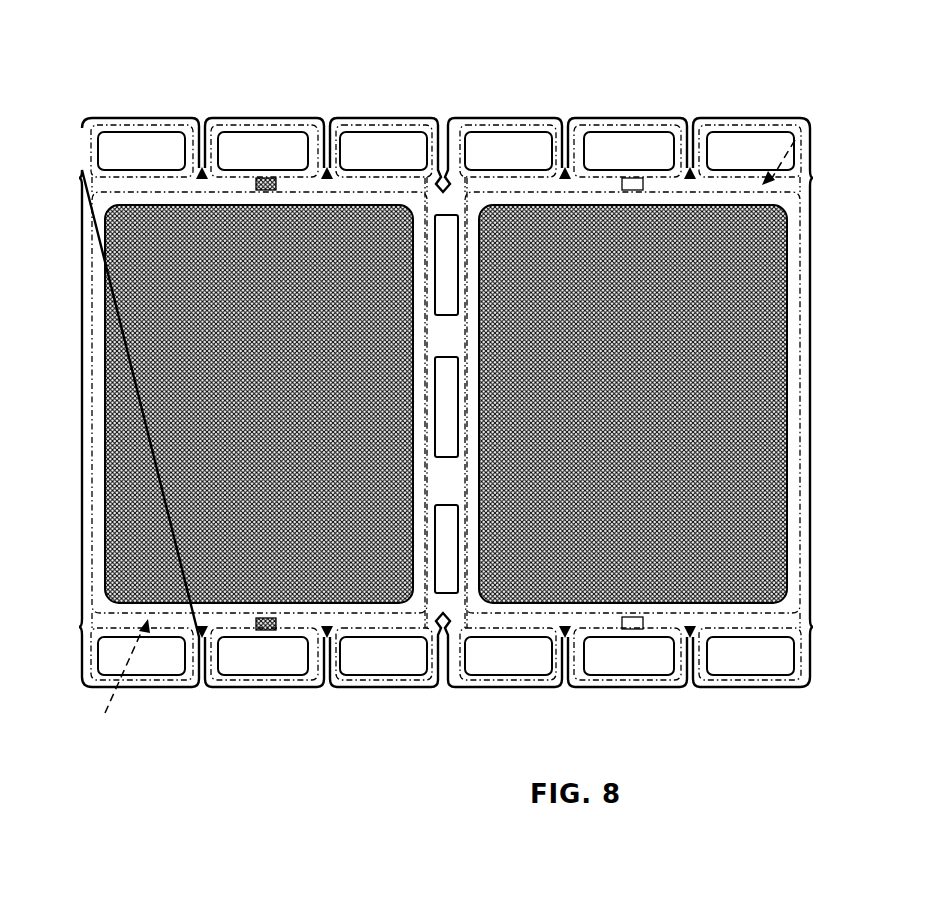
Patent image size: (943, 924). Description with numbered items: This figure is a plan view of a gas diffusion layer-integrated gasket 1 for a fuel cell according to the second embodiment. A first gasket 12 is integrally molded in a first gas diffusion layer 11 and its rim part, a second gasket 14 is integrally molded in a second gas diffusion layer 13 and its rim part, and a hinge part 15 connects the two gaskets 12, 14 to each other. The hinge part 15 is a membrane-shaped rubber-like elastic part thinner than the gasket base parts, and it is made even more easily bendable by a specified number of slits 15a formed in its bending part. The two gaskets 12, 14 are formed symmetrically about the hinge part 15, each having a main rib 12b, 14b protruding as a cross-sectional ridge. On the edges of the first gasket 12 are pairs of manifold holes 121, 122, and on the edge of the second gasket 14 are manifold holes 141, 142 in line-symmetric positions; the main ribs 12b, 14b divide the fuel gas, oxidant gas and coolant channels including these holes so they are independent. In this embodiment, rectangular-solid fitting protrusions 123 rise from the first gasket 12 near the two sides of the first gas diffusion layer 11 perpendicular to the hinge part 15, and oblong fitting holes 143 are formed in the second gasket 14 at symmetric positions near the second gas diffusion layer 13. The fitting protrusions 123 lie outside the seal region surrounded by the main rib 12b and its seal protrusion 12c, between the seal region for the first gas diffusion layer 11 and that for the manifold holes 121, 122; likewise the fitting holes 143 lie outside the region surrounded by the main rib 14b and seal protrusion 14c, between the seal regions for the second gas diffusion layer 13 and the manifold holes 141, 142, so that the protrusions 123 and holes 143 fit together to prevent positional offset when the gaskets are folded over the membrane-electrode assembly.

The gas diffusion layer-integrated gasket 1 is at (411, 108).
The first gas diffusion layer 11 is at (272, 383).
The first gasket 12 is at (233, 418).
The main rib 12b is at (160, 143).
The seal protrusion 12c is at (90, 265).
The manifold holes 121 is at (350, 140).
The manifold holes 122 is at (385, 665).
The fitting protrusions 123 is at (262, 193).
The second gas diffusion layer 13 is at (648, 383).
The second gasket 14 is at (671, 408).
The main rib 14b is at (496, 143).
The seal protrusion 14c is at (805, 290).
The manifold holes 141 is at (720, 135).
The manifold holes 142 is at (743, 658).
The fitting holes 143 is at (633, 192).
The hinge part 15 is at (429, 403).
The slits 15a is at (445, 400).